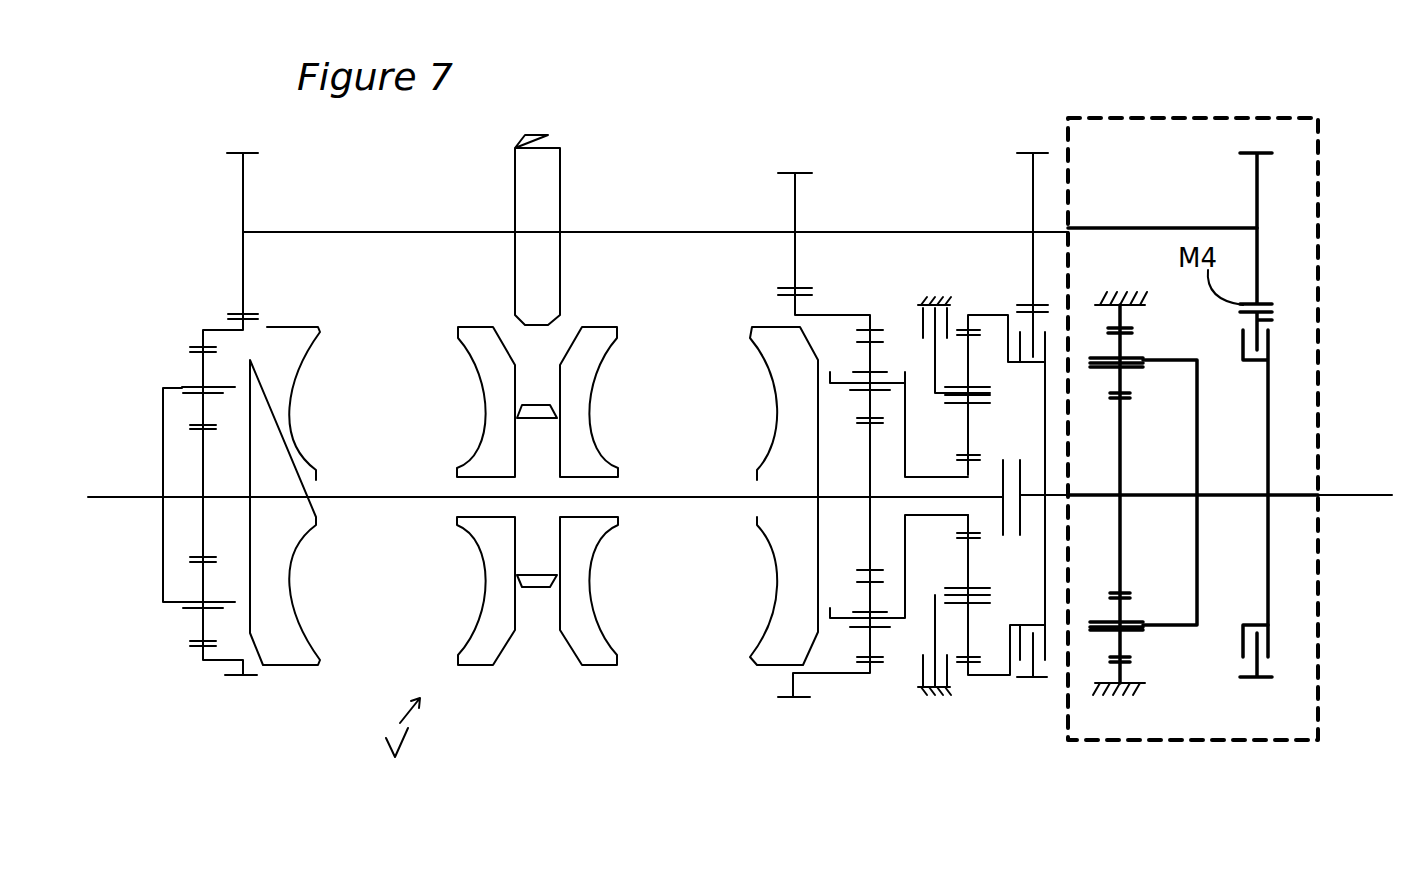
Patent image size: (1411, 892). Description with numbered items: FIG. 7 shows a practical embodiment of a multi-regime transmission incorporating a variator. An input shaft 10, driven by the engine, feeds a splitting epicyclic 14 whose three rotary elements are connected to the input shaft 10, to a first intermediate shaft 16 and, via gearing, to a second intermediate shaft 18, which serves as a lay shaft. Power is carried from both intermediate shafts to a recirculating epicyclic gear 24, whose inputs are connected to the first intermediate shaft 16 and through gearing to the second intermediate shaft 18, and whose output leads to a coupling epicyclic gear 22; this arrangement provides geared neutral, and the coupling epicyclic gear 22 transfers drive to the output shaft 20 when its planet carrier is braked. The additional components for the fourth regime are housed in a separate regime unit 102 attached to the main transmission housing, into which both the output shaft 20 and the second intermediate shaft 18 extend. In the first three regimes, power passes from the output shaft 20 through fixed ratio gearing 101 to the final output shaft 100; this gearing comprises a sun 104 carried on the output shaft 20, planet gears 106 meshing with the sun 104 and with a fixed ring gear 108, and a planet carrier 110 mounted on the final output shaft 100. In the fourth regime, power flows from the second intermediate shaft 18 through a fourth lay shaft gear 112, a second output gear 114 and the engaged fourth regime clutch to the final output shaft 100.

The input shaft 10 is at (120, 497).
The splitting epicyclic 14 is at (185, 694).
The first intermediate shaft 16 is at (677, 497).
The second intermediate shaft 18 is at (687, 232).
The output shaft 20 is at (1083, 495).
The coupling epicyclic gear 22 is at (962, 700).
The recirculating epicyclic gear 24 is at (845, 710).
The final output shaft 100 is at (1340, 495).
The fixed ratio gearing 101 is at (1158, 333).
The regime unit 102 is at (1152, 745).
The sun 104 is at (1122, 447).
The planet gears 106 is at (1125, 382).
The fixed ring gear 108 is at (1115, 320).
The planet carrier 110 is at (1198, 430).
The fourth lay shaft gear 112 is at (1258, 200).
The second output gear 114 is at (1270, 318).